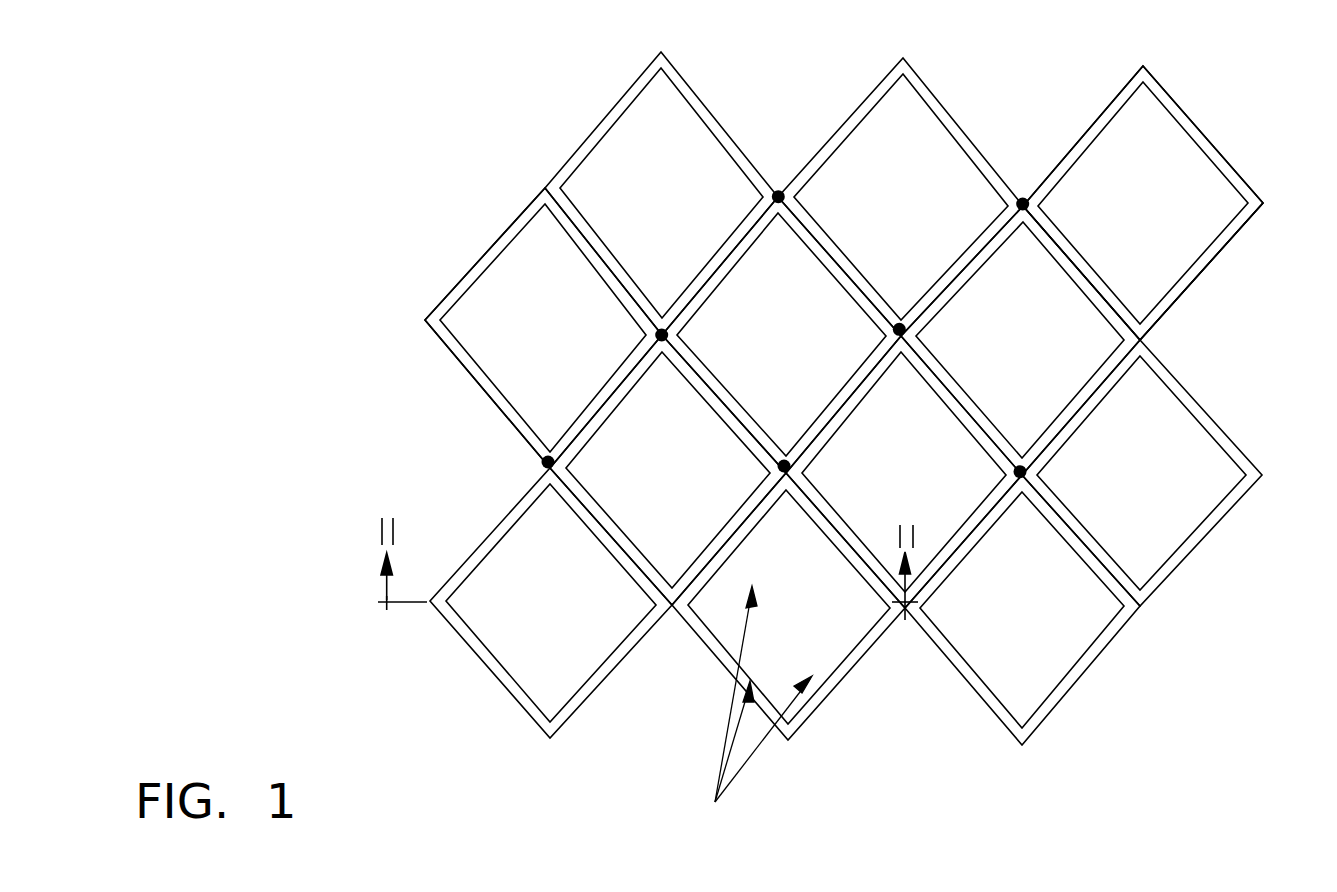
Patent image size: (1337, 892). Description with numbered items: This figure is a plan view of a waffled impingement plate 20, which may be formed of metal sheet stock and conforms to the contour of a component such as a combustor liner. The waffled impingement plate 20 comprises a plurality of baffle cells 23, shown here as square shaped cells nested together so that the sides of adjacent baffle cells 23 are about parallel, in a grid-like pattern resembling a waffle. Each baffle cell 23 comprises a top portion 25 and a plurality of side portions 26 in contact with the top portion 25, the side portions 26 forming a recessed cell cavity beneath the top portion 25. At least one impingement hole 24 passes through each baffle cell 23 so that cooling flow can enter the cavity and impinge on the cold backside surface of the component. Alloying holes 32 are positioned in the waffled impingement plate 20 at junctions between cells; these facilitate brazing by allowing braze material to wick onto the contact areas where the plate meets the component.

The waffled impingement plate 20 is at (290, 90).
The baffle cell 23 is at (649, 215).
The impingement hole 24 is at (702, 778).
The top portion 25 is at (1153, 124).
The side portion 26 is at (458, 276).
The alloying hole 32 is at (661, 330).